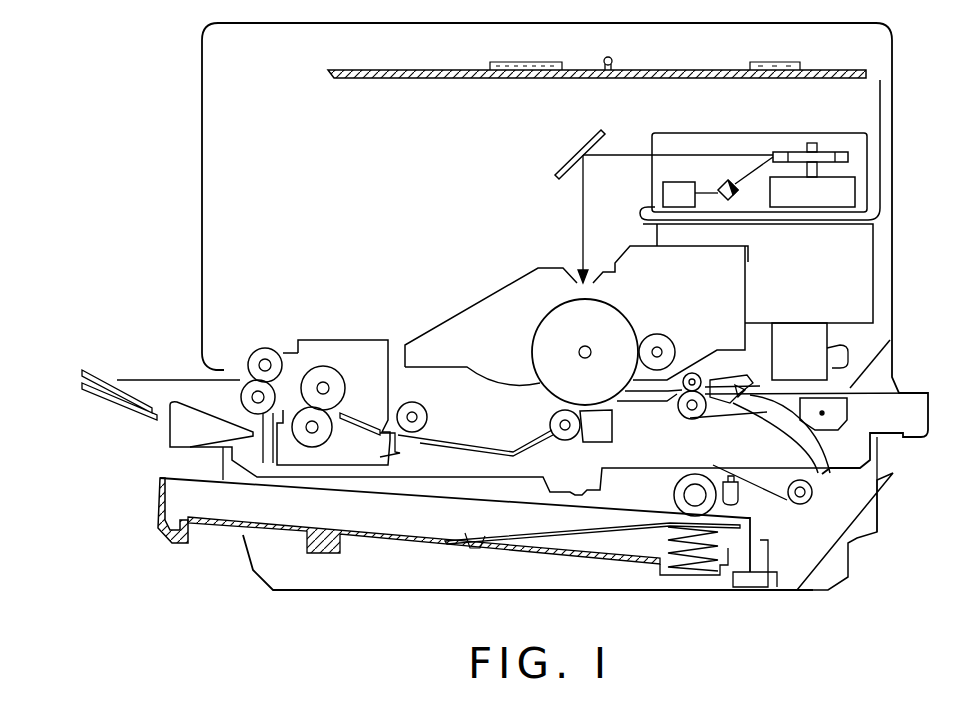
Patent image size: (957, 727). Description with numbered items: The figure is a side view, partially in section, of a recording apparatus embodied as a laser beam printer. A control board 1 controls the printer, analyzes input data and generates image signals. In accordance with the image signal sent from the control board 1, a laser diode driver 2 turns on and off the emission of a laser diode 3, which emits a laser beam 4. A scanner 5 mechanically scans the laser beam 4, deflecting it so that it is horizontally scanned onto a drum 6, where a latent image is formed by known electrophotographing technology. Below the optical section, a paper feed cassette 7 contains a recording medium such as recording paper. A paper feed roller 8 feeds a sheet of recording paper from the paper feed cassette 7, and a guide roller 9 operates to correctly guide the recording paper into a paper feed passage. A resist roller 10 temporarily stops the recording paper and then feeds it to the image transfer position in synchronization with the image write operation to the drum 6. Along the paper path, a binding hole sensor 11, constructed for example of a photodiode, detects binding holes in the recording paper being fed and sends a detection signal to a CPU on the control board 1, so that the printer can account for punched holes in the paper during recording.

The control board 1 is at (823, 72).
The laser diode driver 2 is at (663, 193).
The laser diode 3 is at (725, 181).
The laser beam 4 is at (674, 157).
The scanner 5 is at (840, 152).
The drum 6 is at (620, 306).
The paper feed cassette 7 is at (157, 495).
The paper feed roller 8 is at (692, 473).
The guide roller 9 is at (797, 480).
The resist roller 10 is at (677, 413).
The binding hole sensor 11 is at (727, 478).